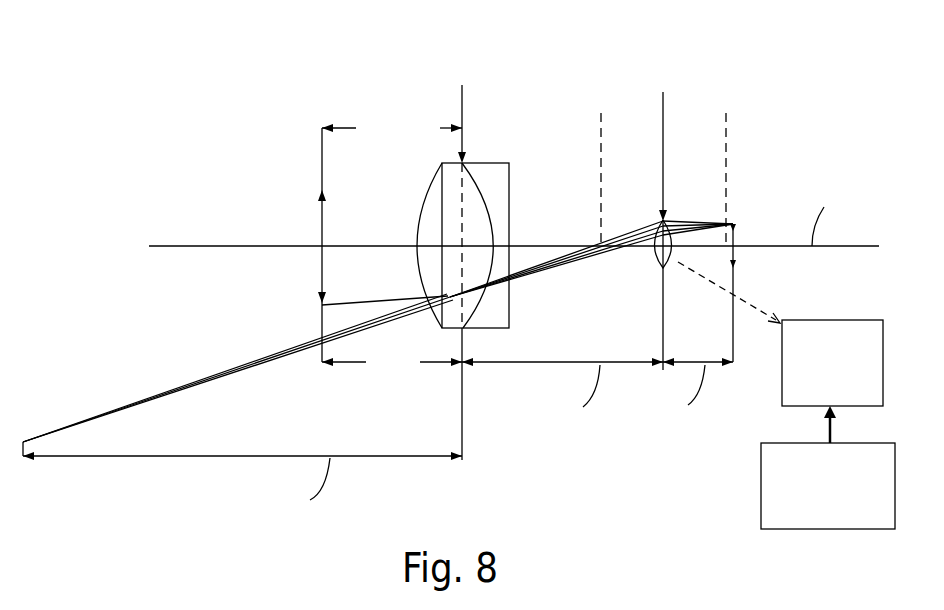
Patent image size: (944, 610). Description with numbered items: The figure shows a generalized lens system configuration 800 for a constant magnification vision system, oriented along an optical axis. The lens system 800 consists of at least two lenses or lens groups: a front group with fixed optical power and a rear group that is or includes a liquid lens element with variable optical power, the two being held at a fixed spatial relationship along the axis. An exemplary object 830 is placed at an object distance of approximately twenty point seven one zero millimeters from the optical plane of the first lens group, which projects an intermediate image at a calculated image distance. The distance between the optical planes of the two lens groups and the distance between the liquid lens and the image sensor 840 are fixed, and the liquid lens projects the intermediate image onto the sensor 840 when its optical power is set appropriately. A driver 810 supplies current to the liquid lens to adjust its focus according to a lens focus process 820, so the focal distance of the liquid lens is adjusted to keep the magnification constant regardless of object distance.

The lens system configuration 800 is at (528, 87).
The driver 810 is at (843, 320).
The lens focus process 820 is at (761, 512).
The object 830 is at (316, 293).
The image sensor 840 is at (737, 232).